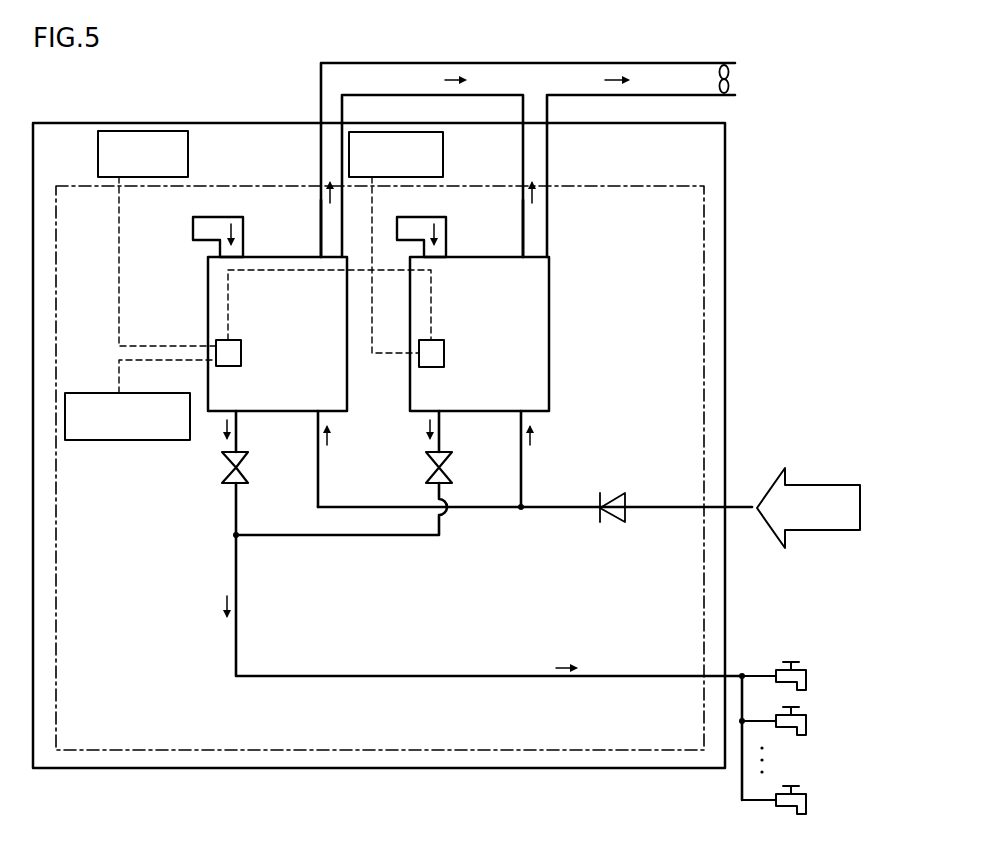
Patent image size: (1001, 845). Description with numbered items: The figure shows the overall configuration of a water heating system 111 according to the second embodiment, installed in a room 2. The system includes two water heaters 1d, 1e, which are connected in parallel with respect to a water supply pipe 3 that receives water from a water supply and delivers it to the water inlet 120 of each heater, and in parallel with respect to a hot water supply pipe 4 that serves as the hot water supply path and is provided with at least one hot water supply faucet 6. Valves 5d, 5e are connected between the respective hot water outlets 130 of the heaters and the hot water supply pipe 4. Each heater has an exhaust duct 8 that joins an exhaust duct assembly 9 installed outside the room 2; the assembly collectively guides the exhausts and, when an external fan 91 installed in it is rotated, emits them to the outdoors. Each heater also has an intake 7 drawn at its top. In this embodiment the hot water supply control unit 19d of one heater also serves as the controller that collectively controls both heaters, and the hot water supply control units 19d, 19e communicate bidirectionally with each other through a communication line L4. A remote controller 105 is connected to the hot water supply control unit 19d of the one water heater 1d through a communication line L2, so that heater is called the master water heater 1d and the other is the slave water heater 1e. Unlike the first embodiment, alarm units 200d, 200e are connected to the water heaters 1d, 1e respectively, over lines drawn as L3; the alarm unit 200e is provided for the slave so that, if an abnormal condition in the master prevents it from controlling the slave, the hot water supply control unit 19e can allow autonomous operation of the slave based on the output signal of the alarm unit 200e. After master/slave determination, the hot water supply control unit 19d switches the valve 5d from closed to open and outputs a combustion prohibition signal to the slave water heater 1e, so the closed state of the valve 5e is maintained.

The room 2 is at (725, 193).
The water heating system 111 is at (640, 186).
The exhaust duct assembly 9 is at (612, 63).
The external fan 91 is at (729, 80).
The exhaust duct 8 is at (320, 240).
The alarm unit 200d is at (188, 150).
The alarm unit 200e is at (443, 152).
The alarm signal line L3 is at (120, 200).
The communication line L2 is at (120, 375).
The communication line L4 is at (392, 270).
The remote controller 105 is at (140, 440).
The air intake / burner 7 is at (214, 217).
The master water heater 1d is at (252, 255).
The slave water heater 1e is at (455, 255).
The hot water supply control unit 19d is at (241, 352).
The hot water supply control unit 19e is at (444, 352).
The hot water outlet 130 is at (237, 412).
The valve 5d is at (229, 484).
The valve 5e is at (432, 484).
The water inlet 120 is at (317, 413).
The water supply pipe 3 is at (478, 509).
The hot water supply pipe 4 is at (432, 674).
The hot water supply faucet 6 is at (808, 678).